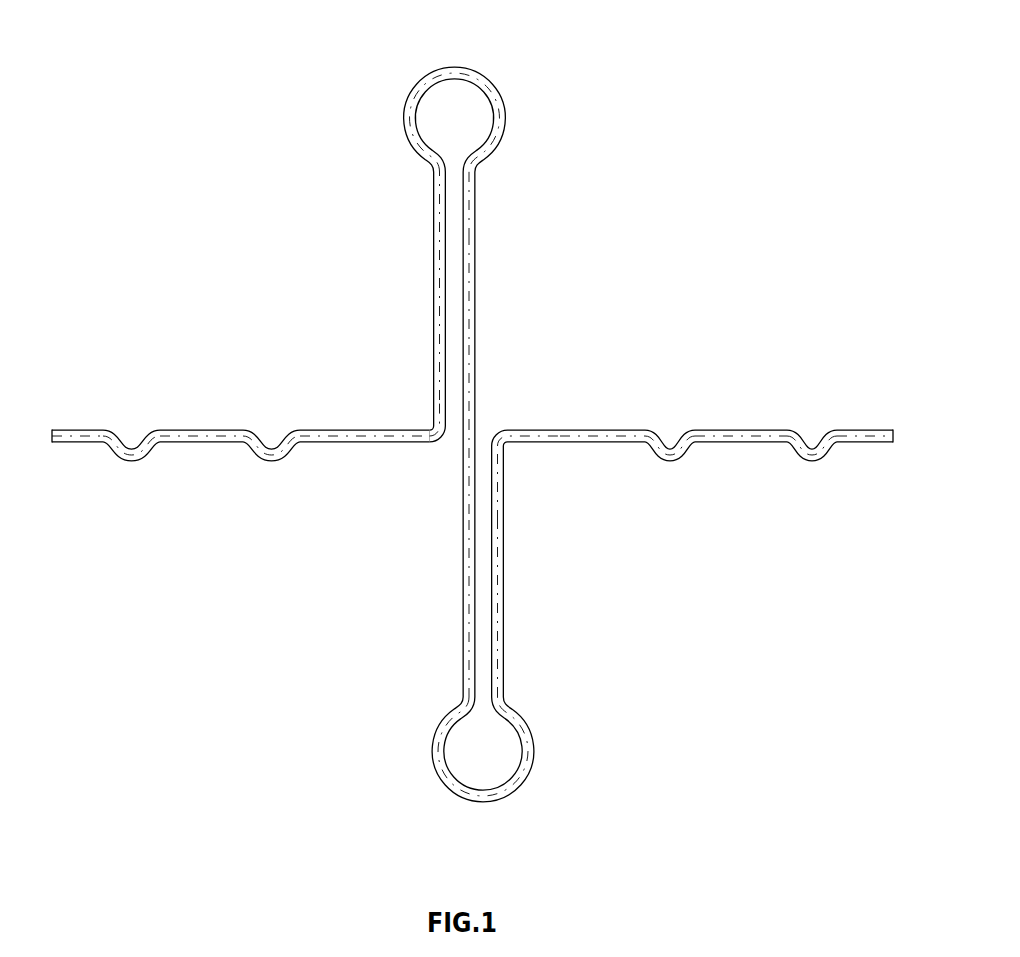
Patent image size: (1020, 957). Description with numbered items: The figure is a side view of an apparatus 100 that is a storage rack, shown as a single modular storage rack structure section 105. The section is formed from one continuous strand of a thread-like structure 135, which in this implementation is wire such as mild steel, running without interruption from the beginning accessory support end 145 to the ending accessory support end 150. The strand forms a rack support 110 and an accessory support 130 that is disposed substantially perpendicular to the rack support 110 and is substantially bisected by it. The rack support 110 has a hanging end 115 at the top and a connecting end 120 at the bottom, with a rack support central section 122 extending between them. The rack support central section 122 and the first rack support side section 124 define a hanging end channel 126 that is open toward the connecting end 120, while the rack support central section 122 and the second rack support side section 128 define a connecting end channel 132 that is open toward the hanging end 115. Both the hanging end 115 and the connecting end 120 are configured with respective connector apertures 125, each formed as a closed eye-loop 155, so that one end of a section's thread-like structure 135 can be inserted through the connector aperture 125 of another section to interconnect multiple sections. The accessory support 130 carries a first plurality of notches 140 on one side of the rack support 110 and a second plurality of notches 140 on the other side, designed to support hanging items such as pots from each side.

The apparatus 100 is at (231, 64).
The storage rack structure section 105 is at (343, 591).
The rack support 110 is at (455, 284).
The hanging end 115 is at (477, 200).
The connecting end 120 is at (552, 614).
The rack support central section 122 is at (477, 338).
The first rack support side section 124 is at (433, 305).
The connector aperture 125 is at (473, 67).
The hanging end channel 126 is at (450, 448).
The second rack support side section 128 is at (507, 597).
The accessory support 130 is at (428, 421).
The connecting end channel 132 is at (488, 427).
The thread-like structure 135 is at (868, 428).
The notches 140 is at (131, 463).
The beginning accessory support end 145 is at (82, 429).
The ending accessory support end 150 is at (883, 445).
The eye-loop 155 is at (455, 120).